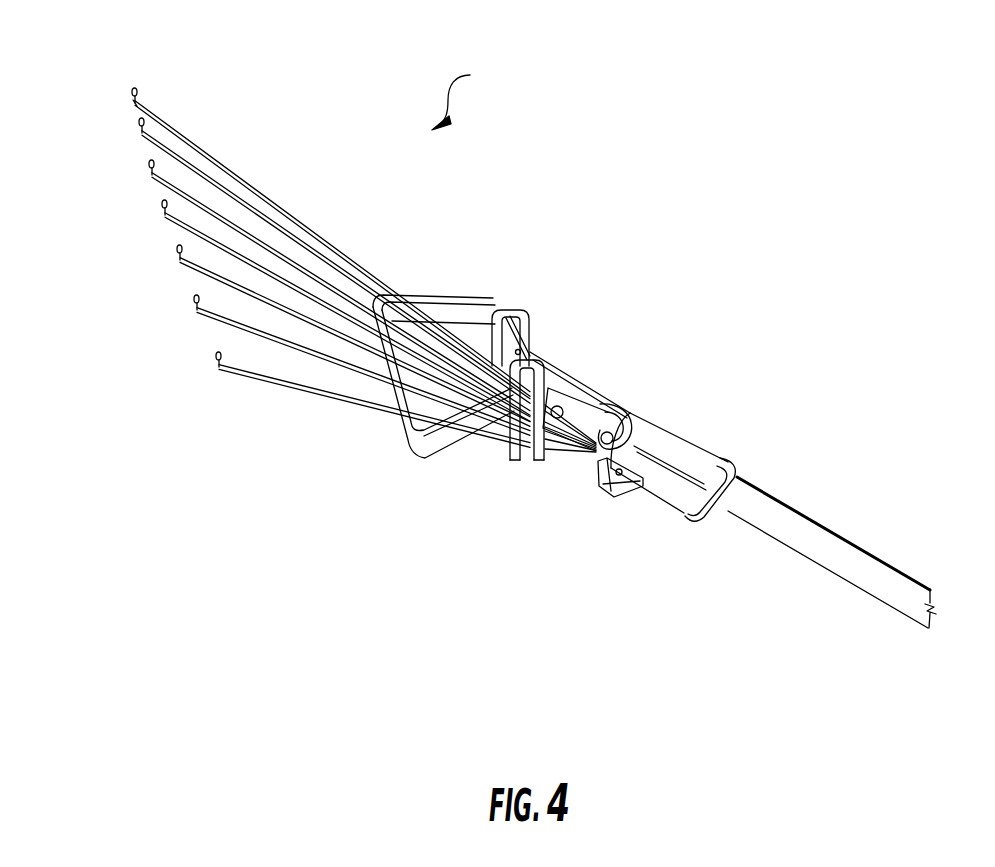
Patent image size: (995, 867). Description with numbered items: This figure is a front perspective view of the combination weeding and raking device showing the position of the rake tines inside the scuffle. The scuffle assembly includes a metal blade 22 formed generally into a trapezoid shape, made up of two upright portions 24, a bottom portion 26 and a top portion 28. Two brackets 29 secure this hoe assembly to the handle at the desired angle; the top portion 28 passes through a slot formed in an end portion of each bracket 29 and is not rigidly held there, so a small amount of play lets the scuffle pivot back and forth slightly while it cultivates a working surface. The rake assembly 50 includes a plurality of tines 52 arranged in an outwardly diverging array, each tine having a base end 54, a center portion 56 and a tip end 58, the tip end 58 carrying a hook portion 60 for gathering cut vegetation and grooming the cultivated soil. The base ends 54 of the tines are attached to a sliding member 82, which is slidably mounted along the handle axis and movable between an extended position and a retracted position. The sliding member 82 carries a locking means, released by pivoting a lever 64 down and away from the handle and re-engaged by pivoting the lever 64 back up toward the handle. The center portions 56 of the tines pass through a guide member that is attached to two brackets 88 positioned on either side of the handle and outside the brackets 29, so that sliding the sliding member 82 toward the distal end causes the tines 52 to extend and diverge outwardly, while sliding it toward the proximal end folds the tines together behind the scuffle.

The metal blade 22 is at (422, 454).
The upright portions 24 is at (455, 298).
The bottom portion 26 is at (387, 400).
The top portion 28 is at (512, 336).
The brackets 29 is at (613, 407).
The extended rake assembly 50 is at (466, 93).
The tines 52 is at (217, 157).
The base end 54 is at (598, 463).
The center portion 56 is at (388, 258).
The tip end 58 is at (135, 85).
The hook portion 60 is at (133, 107).
The lever 64 is at (712, 519).
The sliding member 82 is at (690, 438).
The brackets 88 is at (552, 371).